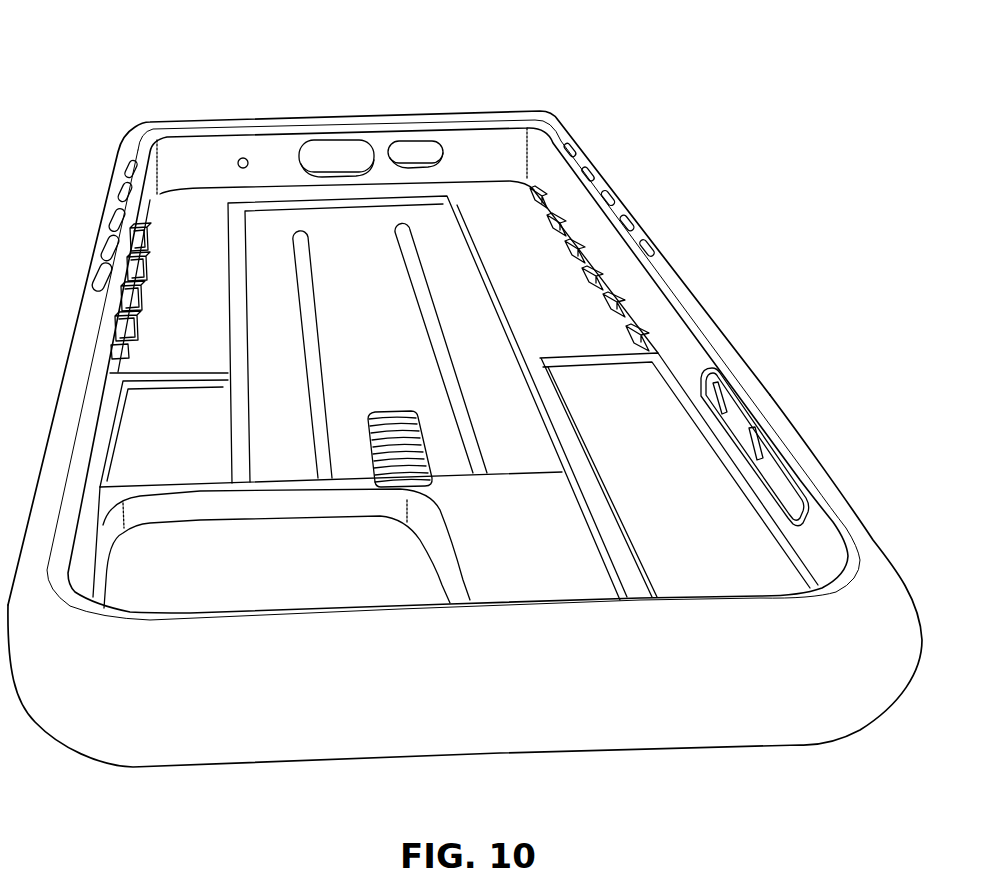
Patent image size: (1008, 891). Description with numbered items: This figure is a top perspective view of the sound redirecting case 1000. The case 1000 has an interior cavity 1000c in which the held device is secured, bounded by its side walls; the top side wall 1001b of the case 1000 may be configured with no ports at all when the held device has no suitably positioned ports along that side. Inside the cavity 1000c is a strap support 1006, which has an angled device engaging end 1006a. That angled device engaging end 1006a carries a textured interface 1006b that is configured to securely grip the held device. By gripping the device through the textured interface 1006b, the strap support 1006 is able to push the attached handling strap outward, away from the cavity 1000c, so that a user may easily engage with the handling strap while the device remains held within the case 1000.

The sound redirecting case 1000 is at (263, 110).
The cavity 1000c is at (214, 315).
The top side wall 1001b is at (550, 712).
The strap support 1006 is at (450, 389).
The angled device engaging end 1006a is at (410, 443).
The textured interface 1006b is at (405, 428).